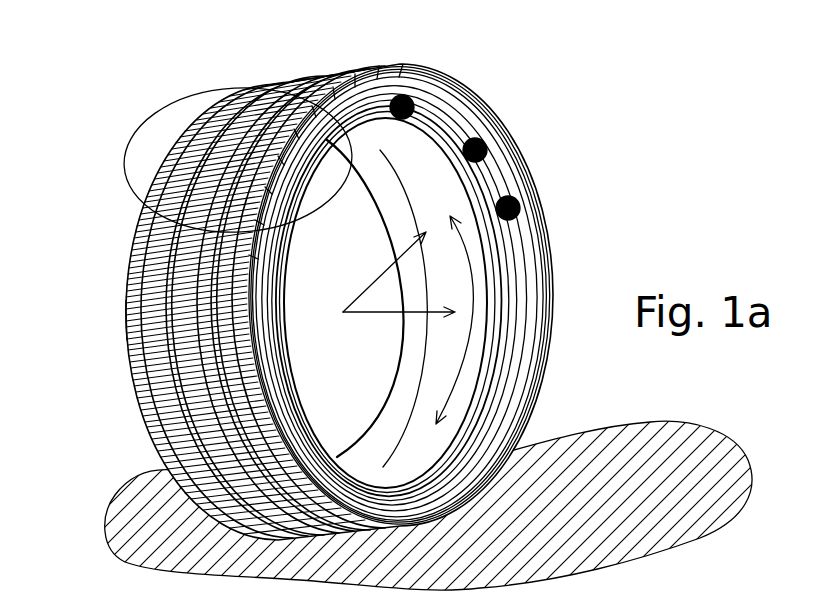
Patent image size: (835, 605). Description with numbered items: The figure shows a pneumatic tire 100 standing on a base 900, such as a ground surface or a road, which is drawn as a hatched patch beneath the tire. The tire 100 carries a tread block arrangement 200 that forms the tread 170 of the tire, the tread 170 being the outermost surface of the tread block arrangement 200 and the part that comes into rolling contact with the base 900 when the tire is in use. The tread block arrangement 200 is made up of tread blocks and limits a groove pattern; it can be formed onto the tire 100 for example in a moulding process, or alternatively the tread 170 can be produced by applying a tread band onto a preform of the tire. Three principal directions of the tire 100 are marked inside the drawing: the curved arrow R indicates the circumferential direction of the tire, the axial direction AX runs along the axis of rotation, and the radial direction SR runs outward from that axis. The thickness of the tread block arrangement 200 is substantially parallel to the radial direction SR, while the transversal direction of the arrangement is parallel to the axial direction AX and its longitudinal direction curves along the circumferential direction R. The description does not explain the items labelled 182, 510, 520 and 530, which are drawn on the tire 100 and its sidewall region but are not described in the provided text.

The pneumatic tire 100 is at (383, 282).
The tread 170 is at (307, 51).
The shoulder portion 182 is at (128, 370).
The tread block arrangement 200 is at (148, 131).
The first marker 510 is at (414, 103).
The second marker 520 is at (487, 148).
The third marker 530 is at (521, 208).
The base 900 is at (642, 513).
The arrow R indicating circumferential direction R is at (474, 350).
The radial direction SR is at (384, 272).
The axial direction AX is at (399, 327).